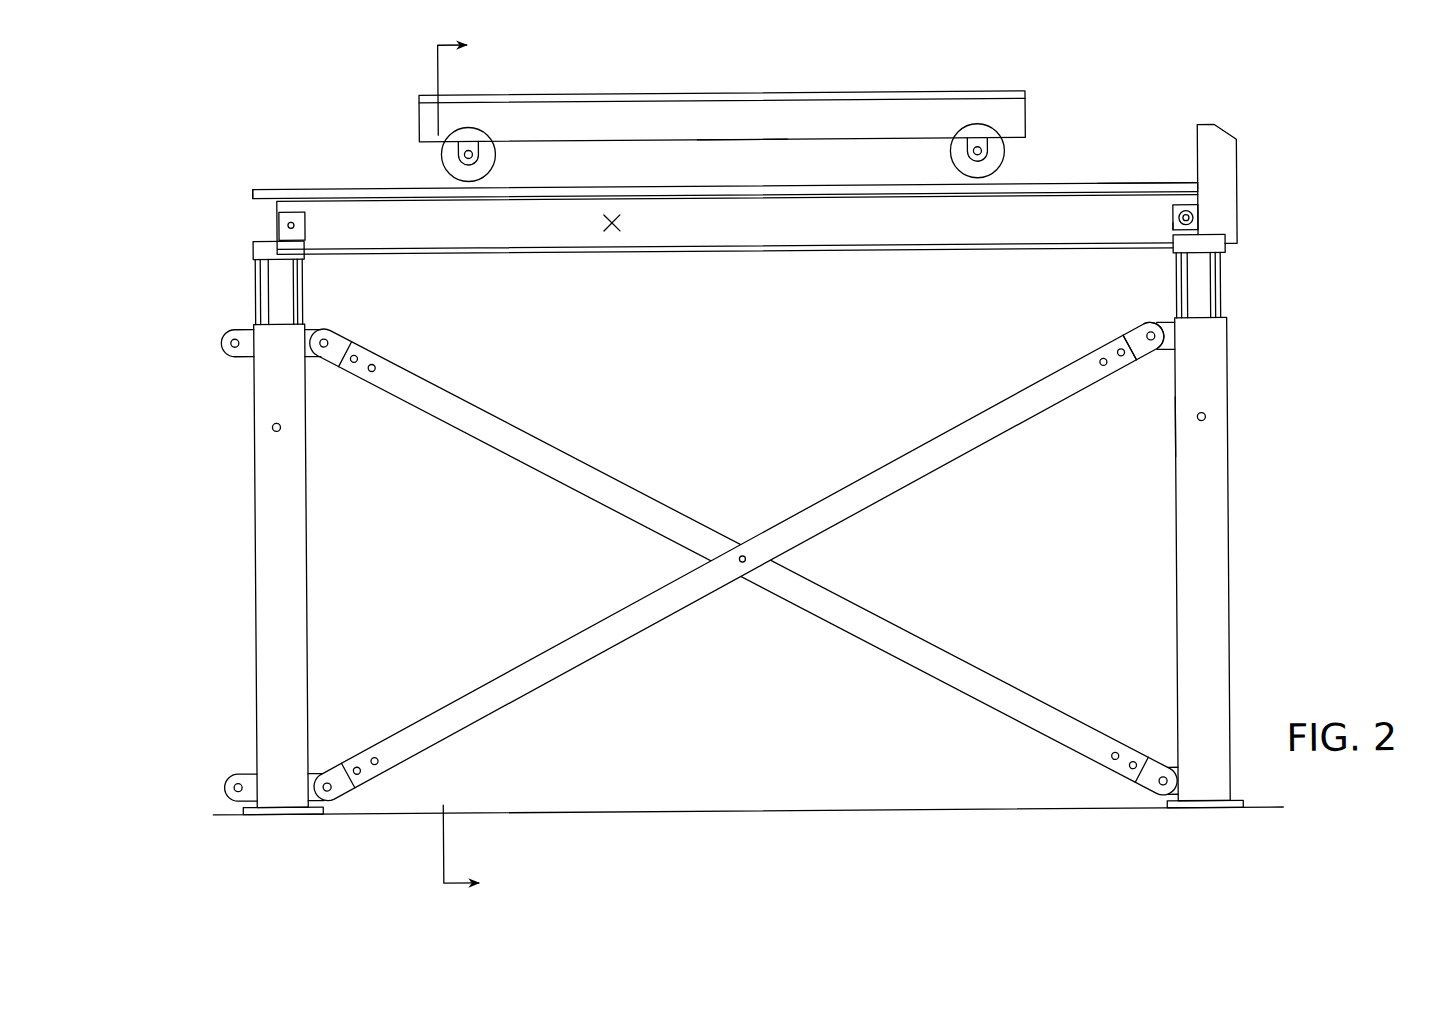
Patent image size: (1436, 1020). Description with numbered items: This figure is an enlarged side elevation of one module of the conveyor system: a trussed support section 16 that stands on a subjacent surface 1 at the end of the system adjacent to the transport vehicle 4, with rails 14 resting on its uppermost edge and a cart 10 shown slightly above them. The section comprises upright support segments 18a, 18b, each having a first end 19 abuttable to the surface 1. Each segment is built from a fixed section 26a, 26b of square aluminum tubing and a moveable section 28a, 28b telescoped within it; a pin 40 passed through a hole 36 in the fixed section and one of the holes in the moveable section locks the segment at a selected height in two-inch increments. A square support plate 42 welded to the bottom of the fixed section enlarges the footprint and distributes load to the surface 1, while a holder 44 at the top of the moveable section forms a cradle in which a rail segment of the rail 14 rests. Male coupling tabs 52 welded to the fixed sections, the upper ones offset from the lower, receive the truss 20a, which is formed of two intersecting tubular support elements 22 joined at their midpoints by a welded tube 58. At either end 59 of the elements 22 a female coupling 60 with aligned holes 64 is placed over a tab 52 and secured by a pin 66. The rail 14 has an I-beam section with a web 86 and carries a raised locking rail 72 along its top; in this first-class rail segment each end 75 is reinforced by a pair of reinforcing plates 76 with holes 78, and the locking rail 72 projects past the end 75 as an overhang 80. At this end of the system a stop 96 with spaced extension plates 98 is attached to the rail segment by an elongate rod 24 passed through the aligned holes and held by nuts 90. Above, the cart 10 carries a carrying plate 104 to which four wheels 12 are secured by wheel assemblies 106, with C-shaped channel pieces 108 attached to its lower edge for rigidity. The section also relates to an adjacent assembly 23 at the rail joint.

The subjacent surface 1 is at (697, 872).
The transport vehicle 4 is at (468, 466).
The cart 10 is at (729, 135).
The wheels 12 is at (721, 180).
The rails 14 is at (738, 262).
The trussed support section 16 is at (1234, 555).
The upright support segment 18a is at (1200, 556).
The upright support segment 18b is at (288, 527).
The first end of support segment 19 is at (234, 761).
The first truss 20a is at (739, 561).
The intersecting tubular support elements 22 is at (743, 568).
The beam assembly 23 is at (236, 249).
The elongate rod 24 is at (1196, 221).
The fixed section 26a is at (1239, 597).
The fixed section 26b is at (255, 526).
The moveable section 28a is at (1244, 276).
The moveable section 28b is at (271, 297).
The hole 36 is at (1204, 432).
The pin 40 is at (1206, 418).
The support plate 42 is at (1238, 812).
The holder 44 is at (1227, 246).
The male coupling tabs 52 is at (1174, 343).
The tube 58 is at (742, 555).
The end of tubular element 59 is at (358, 328).
The female coupling 60 is at (1138, 336).
The holes 64 is at (1148, 352).
The pin 66 is at (1152, 334).
The locking rail 72 is at (1132, 186).
The end of rail segment 75 is at (690, 159).
The reinforcing plates 76 is at (268, 248).
The holes 78 is at (290, 222).
The overhang 80 is at (265, 186).
The web 86 is at (614, 230).
The nuts 90 is at (1175, 224).
The stop 96 is at (1228, 174).
The spaced extension plates 98 is at (1200, 233).
The carrying plate 104 is at (948, 94).
The wheel assemblies 106 is at (952, 144).
The C-shaped channel pieces 108 is at (744, 140).